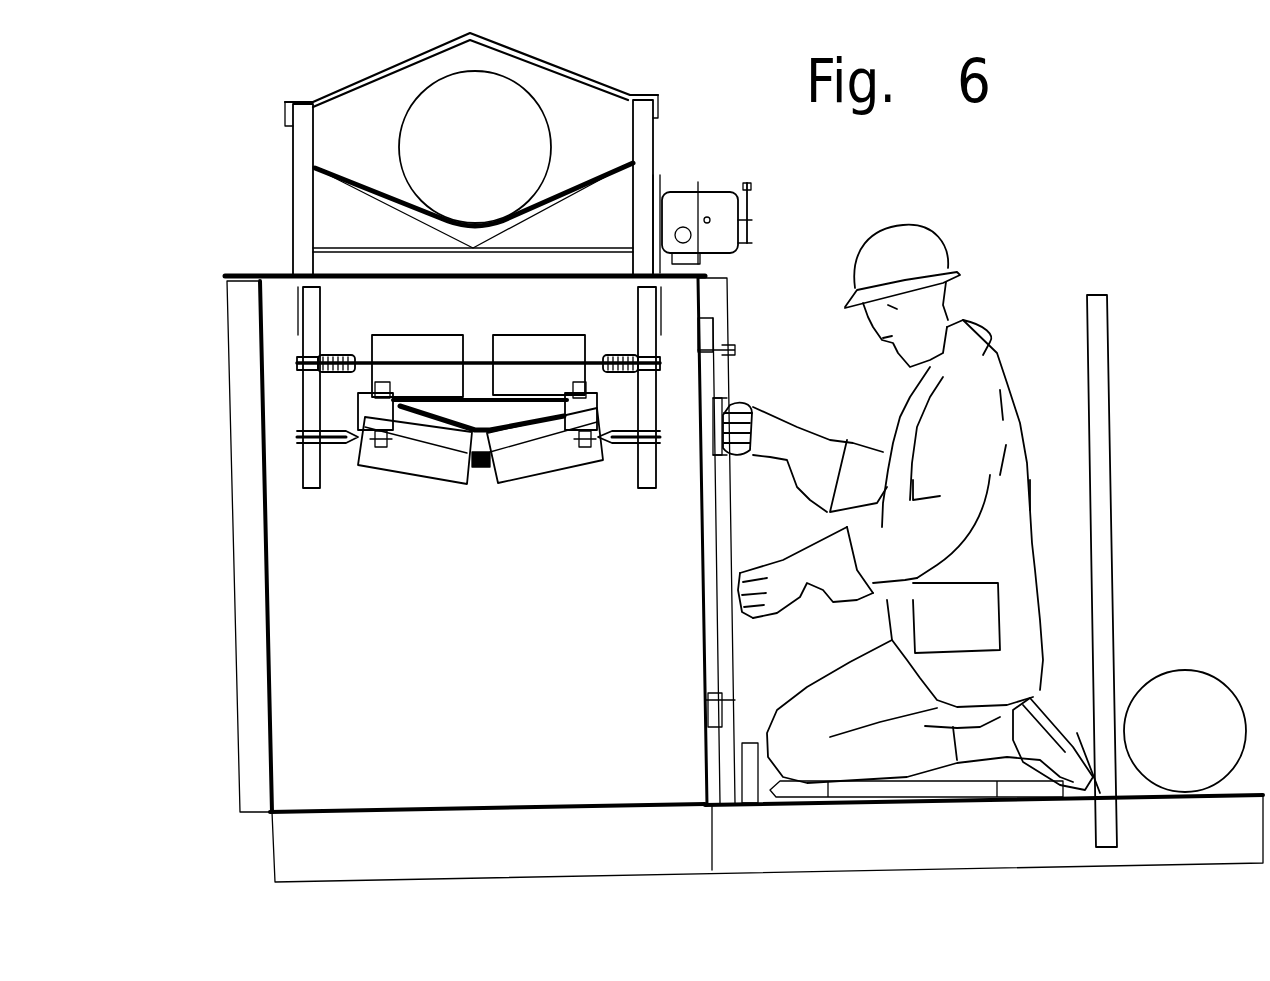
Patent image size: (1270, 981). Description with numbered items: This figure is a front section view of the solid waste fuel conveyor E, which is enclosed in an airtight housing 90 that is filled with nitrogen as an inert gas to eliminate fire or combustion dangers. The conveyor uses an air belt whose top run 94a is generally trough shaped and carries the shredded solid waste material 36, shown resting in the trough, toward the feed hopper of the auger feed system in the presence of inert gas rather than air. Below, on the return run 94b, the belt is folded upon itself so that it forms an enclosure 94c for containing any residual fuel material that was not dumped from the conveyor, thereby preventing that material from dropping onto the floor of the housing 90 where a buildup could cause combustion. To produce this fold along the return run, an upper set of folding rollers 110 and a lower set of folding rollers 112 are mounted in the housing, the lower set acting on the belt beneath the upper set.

The solid waste fuel conveyor E is at (303, 74).
The shredded solid waste material 36 is at (477, 167).
The airtight housing 90 is at (284, 251).
The top run 94a is at (575, 190).
The return run 94b is at (456, 420).
The enclosure 94c is at (490, 408).
The upper set of folding rollers 110 is at (416, 310).
The lower set of folding rollers 112 is at (381, 484).